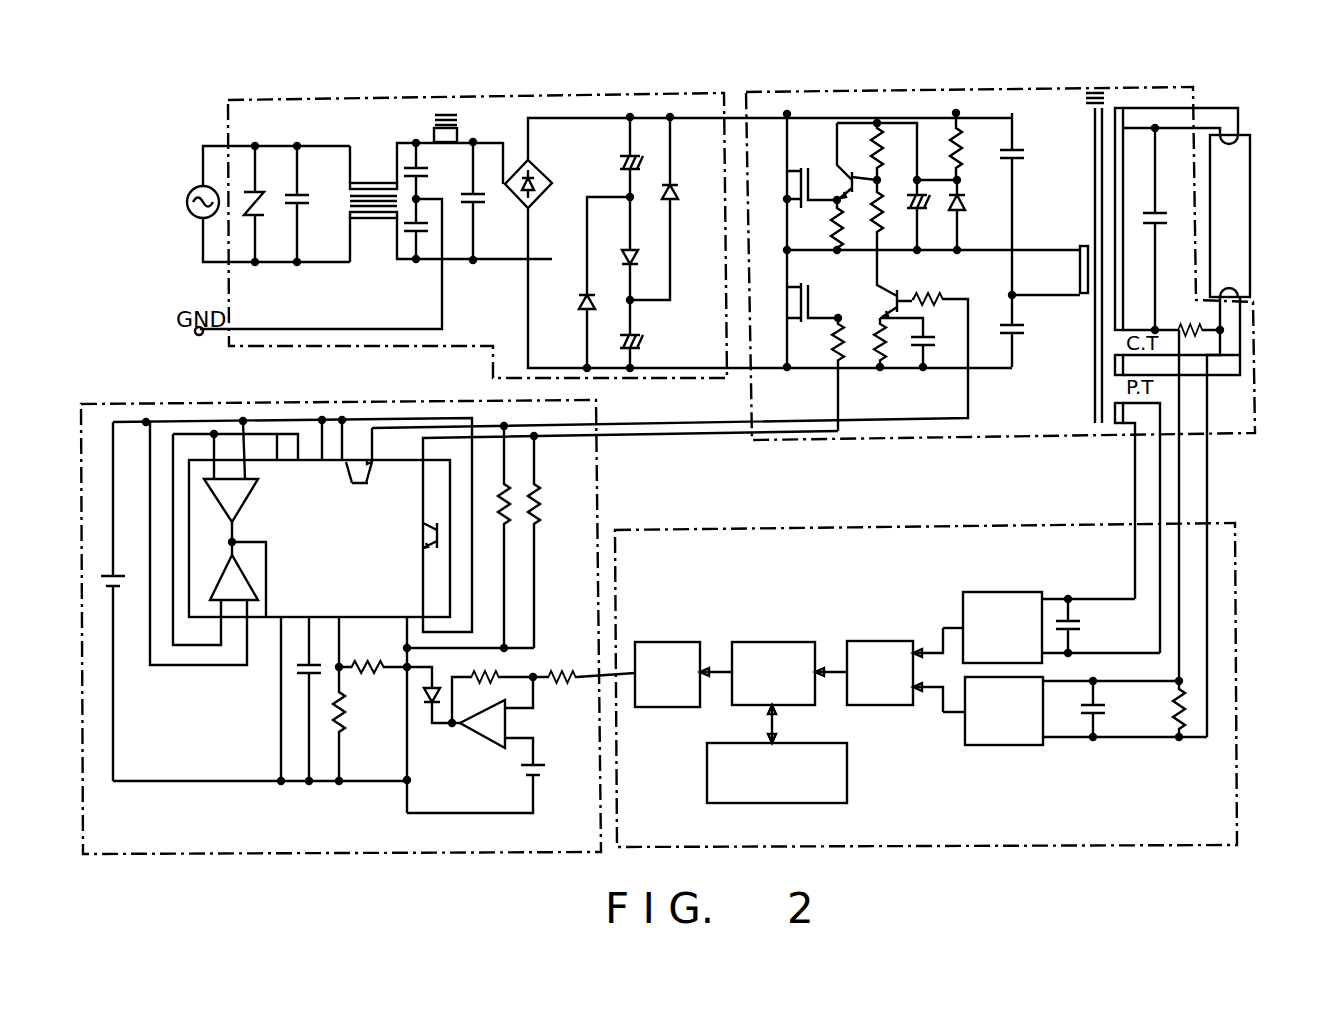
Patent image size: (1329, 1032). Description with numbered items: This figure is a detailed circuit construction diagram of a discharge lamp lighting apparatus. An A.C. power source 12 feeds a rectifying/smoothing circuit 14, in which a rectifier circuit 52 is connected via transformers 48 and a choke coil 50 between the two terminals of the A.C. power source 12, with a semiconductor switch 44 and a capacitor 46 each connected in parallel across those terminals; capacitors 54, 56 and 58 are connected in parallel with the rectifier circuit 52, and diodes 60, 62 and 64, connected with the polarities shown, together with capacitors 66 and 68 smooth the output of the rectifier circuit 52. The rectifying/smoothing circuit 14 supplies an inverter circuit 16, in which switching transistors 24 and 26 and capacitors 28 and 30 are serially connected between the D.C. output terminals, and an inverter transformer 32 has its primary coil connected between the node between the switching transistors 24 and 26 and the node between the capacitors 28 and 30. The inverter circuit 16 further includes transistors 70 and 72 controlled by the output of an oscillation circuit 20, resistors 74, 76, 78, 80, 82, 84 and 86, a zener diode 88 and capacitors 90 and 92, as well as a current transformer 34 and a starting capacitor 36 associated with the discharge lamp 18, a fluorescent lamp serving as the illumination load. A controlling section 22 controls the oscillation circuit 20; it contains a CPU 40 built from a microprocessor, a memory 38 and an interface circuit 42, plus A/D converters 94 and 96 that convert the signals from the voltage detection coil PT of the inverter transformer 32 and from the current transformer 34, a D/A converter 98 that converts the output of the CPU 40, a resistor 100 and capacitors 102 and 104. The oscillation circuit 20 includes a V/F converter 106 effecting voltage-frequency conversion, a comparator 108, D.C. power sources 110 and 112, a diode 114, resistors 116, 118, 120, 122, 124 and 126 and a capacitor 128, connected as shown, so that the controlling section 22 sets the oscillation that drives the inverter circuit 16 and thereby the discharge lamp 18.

The A.C. power source 12 is at (186, 206).
The rectifying/smoothing circuit 14 is at (228, 130).
The inverter circuit 16 is at (1186, 86).
The discharge lamp 18 is at (1250, 232).
The oscillation circuit 20 is at (156, 390).
The controlling section 22 is at (702, 522).
The switching transistor 24 is at (788, 185).
The switching transistor 26 is at (790, 305).
The capacitor 28 is at (1026, 155).
The capacitor 30 is at (1026, 333).
The inverter transformer 32 is at (1082, 300).
The current transformer 34 is at (1208, 348).
The starting capacitor 36 is at (1142, 212).
The memory 38 is at (847, 774).
The CPU 40 is at (768, 644).
The interface circuit 42 is at (878, 644).
The semiconductor switch 44 is at (262, 210).
The capacitor 46 is at (310, 200).
The transformer 48 is at (370, 225).
The choke coil 50 is at (460, 122).
The rectifier circuit 52 is at (578, 170).
The capacitor 54 is at (430, 170).
The capacitor 56 is at (406, 230).
The capacitor 58 is at (484, 200).
The diode 60 is at (637, 257).
The diode 62 is at (585, 312).
The diode 64 is at (680, 192).
The capacitor 66 is at (618, 162).
The capacitor 68 is at (644, 340).
The transistor 70 is at (838, 175).
The transistor 72 is at (886, 296).
The resistor 74 is at (834, 228).
The resistor 76 is at (874, 154).
The resistor 78 is at (874, 228).
The resistor 80 is at (876, 342).
The resistor 82 is at (924, 295).
The resistor 84 is at (962, 148).
The resistor 86 is at (832, 338).
The zener diode 88 is at (968, 206).
The capacitor 90 is at (912, 210).
The capacitor 92 is at (928, 338).
The A/D converter 94 is at (1002, 596).
The A/D converter 96 is at (1016, 746).
The D/A converter 98 is at (662, 644).
The resistor 100 is at (1174, 726).
The capacitor 102 is at (1082, 626).
The capacitor 104 is at (1100, 702).
The V/F converter 106 is at (260, 620).
The comparator 108 is at (486, 732).
The D.C. power source 110 is at (540, 774).
The D.C. power source 112 is at (96, 586).
The diode 114 is at (426, 708).
The resistor 116 is at (558, 684).
The resistor 118 is at (486, 680).
The resistor 120 is at (368, 660).
The resistor 122 is at (352, 706).
The resistor 124 is at (510, 506).
The resistor 126 is at (534, 498).
The capacitor 128 is at (296, 672).